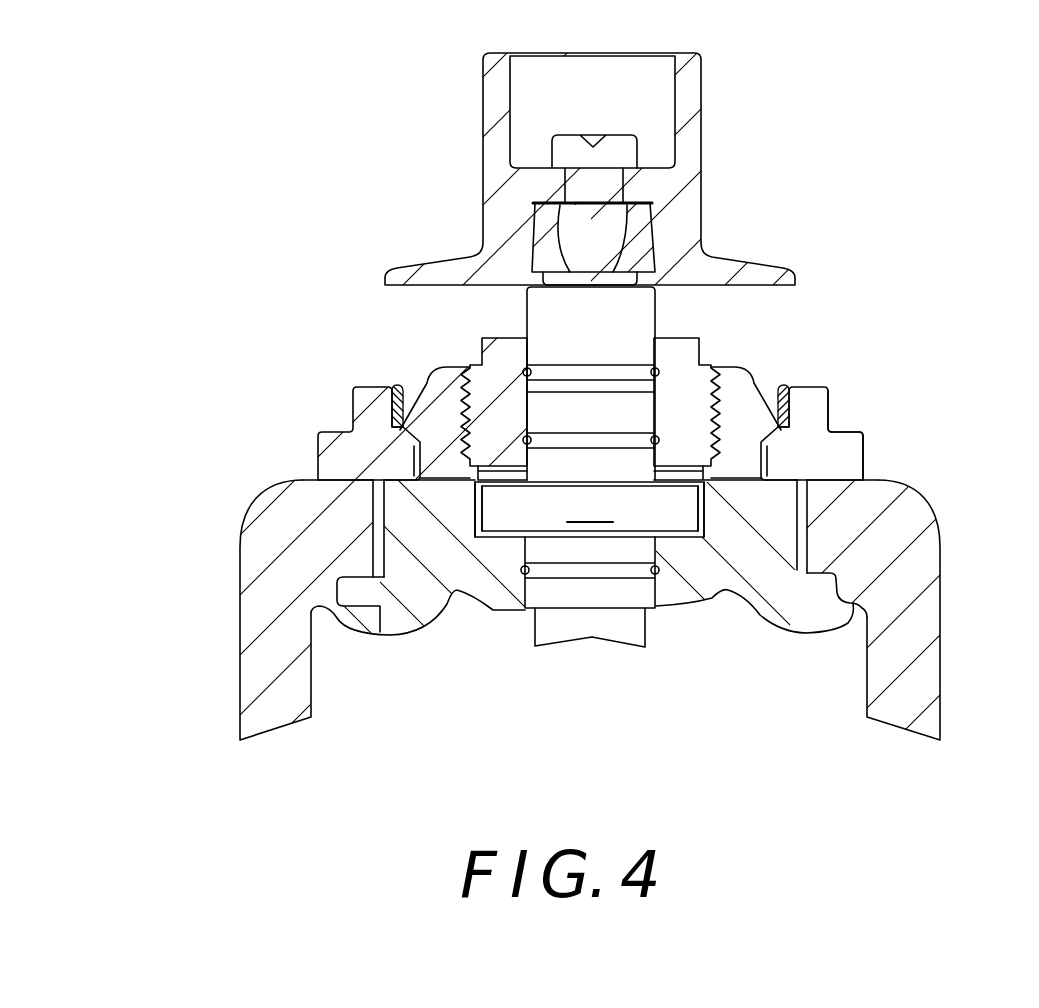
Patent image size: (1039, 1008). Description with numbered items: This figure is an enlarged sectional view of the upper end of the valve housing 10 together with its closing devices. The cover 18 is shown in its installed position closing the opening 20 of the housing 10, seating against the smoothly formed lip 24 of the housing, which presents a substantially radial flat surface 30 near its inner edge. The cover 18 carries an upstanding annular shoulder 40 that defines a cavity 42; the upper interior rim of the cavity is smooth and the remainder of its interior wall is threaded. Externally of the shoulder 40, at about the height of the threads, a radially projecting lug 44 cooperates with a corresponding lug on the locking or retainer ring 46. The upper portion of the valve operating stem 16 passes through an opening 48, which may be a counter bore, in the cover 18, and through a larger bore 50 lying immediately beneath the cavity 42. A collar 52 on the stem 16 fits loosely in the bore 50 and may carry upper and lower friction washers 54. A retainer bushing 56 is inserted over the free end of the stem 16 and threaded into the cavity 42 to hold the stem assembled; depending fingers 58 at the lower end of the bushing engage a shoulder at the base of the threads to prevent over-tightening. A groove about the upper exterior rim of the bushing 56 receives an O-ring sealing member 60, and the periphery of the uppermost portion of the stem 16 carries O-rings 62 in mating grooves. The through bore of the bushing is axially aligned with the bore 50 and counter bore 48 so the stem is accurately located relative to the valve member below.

The valve housing 10 is at (240, 722).
The valve operating stem 16 is at (643, 636).
The cover 18 is at (410, 633).
The opening 20 is at (372, 522).
The lip 24 is at (378, 608).
The flat surface 30 is at (352, 578).
The annular shoulder 40 is at (790, 385).
The cavity 42 is at (486, 479).
The lug 44 is at (800, 413).
The retainer ring 46 is at (862, 446).
The opening 48 is at (657, 597).
The bore 50 is at (712, 513).
The collar 52 is at (589, 509).
The friction washers 54 is at (682, 468).
The retainer bushing 56 is at (496, 338).
The depending fingers 58 is at (473, 505).
The O-ring sealing member 60 is at (745, 367).
The O-rings 62 is at (522, 373).